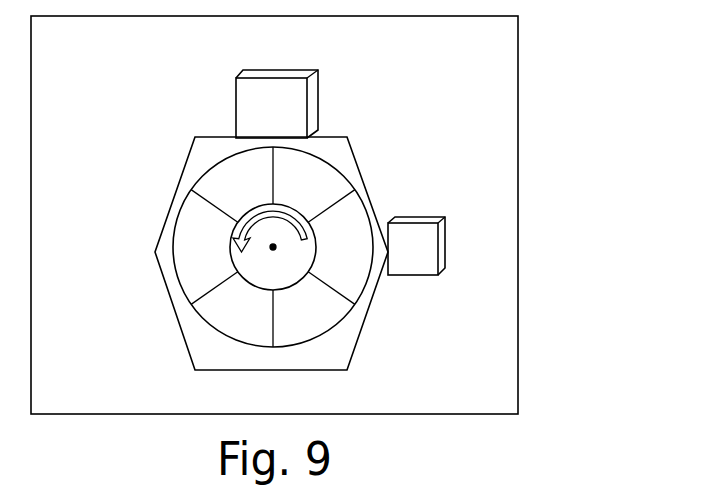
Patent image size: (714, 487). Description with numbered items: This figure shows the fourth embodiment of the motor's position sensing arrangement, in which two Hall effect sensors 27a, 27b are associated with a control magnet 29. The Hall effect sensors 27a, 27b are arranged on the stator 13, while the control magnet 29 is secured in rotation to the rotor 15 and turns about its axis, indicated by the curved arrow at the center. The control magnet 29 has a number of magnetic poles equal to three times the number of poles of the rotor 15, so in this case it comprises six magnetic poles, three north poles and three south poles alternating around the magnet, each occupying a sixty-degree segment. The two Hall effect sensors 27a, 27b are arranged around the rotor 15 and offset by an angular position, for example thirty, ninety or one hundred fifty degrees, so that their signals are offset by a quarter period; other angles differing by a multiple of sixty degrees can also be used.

The stator 13 is at (505, 67).
The rotor 15 is at (283, 247).
The Hall effect sensor 27a is at (292, 97).
The Hall effect sensor 27b is at (422, 248).
The control magnet 29 is at (197, 217).